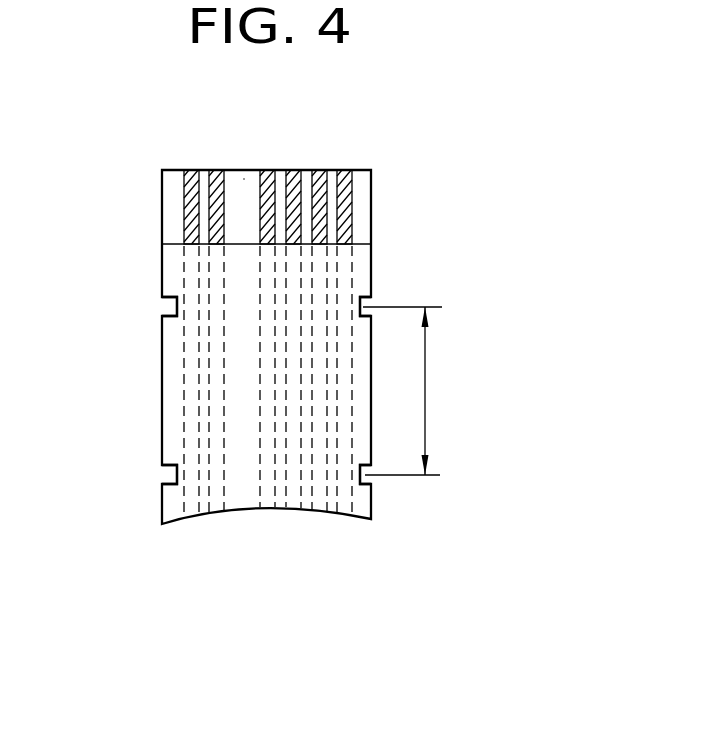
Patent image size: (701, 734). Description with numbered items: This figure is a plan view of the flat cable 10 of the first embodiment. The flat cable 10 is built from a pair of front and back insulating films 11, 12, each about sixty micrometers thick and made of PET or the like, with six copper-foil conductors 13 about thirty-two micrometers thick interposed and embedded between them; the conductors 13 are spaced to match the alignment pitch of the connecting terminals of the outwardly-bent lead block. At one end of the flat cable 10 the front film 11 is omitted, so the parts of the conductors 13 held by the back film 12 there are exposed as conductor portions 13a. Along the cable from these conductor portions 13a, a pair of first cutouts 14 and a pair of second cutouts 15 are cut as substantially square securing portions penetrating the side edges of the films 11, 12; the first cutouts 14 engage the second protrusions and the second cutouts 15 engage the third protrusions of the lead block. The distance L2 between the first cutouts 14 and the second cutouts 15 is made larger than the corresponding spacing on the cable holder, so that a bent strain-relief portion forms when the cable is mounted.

The flat cable 10 is at (405, 226).
The front film 11 is at (173, 397).
The back film 12 is at (244, 178).
The conductors 13 is at (272, 505).
The conductor portions 13a is at (157, 167).
The first cutouts 14 is at (168, 306).
The second cutouts 15 is at (170, 475).
The distance between the first cutouts and the second cutouts L2 is at (415, 391).